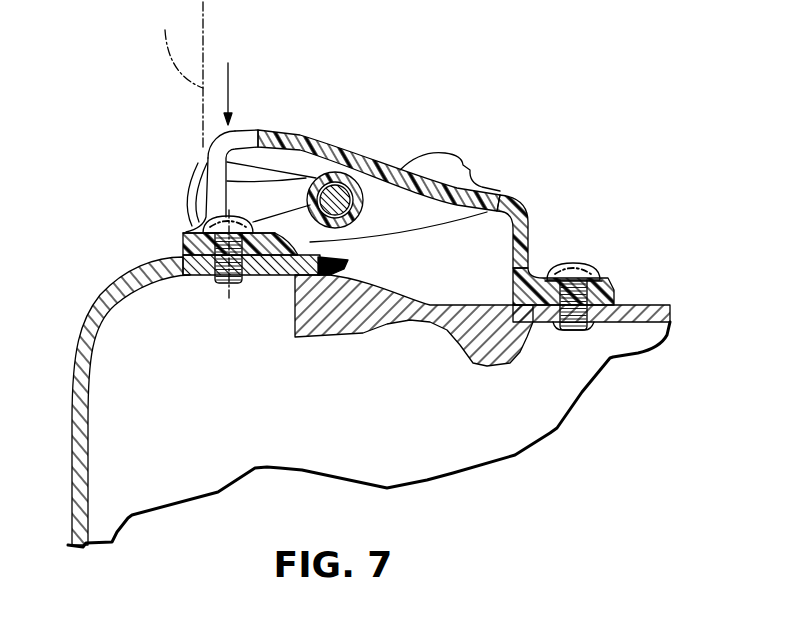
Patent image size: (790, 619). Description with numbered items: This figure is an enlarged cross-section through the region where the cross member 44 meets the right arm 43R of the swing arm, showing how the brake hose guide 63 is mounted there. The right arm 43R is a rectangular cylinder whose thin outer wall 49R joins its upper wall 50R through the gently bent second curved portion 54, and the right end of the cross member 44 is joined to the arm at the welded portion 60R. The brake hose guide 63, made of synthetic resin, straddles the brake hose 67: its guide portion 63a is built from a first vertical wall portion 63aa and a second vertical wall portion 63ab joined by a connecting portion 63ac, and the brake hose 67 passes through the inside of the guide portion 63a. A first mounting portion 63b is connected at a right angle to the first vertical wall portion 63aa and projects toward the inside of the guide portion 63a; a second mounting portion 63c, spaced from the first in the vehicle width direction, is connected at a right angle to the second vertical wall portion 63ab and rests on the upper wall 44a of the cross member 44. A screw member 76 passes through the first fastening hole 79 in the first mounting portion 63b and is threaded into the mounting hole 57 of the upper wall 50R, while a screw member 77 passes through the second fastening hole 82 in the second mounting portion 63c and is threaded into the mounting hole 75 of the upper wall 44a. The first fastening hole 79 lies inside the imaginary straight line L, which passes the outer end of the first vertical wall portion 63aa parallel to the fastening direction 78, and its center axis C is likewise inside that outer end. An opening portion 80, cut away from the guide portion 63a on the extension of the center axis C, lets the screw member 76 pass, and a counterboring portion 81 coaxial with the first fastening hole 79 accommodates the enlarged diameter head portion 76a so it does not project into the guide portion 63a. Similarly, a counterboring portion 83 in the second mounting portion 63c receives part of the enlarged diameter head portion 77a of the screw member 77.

The imaginary straight line L is at (181, 74).
The fastening direction 78 is at (233, 78).
The connecting portion 63ac is at (298, 126).
The opening portion 80 is at (247, 128).
The brake hose 67 is at (380, 157).
The guide portion 63a is at (411, 151).
The first vertical wall portion 63aa is at (218, 148).
The second vertical wall portion 63ab is at (531, 268).
The counterboring portion 81 is at (190, 178).
The right arm 43R is at (357, 357).
The enlarged diameter head portion 76a is at (236, 222).
The center axis C is at (233, 222).
The brake hose guide 63 is at (389, 212).
The counterboring portion 83 is at (556, 265).
The enlarged diameter head portion 77a is at (590, 263).
The first fastening hole 79 is at (197, 240).
The second fastening hole 82 is at (572, 264).
The cross member 44 is at (427, 310).
The welded portion 60R is at (350, 262).
The upper wall 44a is at (643, 303).
The second curved portion 54 is at (92, 312).
The screw member 76 is at (212, 271).
The first mounting portion 63b is at (258, 252).
The upper wall 50R is at (198, 268).
The mounting hole 57 is at (241, 282).
The mounting hole 75 is at (567, 324).
The second mounting portion 63c is at (613, 357).
The screw member 77 is at (601, 293).
The outer wall 49R is at (80, 494).